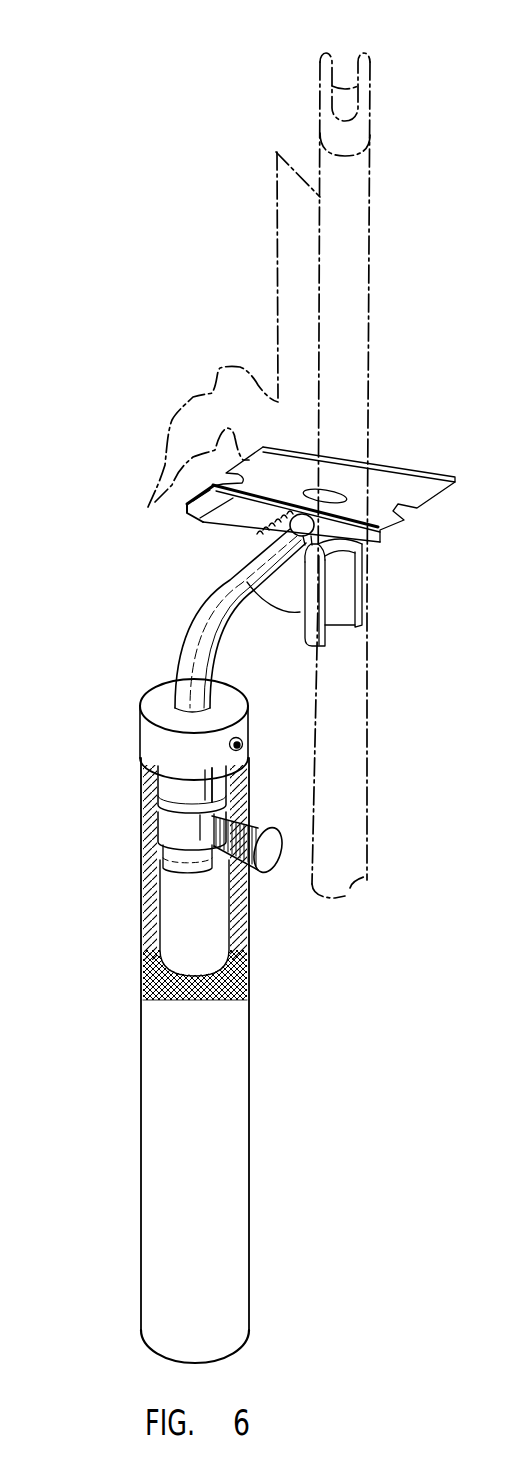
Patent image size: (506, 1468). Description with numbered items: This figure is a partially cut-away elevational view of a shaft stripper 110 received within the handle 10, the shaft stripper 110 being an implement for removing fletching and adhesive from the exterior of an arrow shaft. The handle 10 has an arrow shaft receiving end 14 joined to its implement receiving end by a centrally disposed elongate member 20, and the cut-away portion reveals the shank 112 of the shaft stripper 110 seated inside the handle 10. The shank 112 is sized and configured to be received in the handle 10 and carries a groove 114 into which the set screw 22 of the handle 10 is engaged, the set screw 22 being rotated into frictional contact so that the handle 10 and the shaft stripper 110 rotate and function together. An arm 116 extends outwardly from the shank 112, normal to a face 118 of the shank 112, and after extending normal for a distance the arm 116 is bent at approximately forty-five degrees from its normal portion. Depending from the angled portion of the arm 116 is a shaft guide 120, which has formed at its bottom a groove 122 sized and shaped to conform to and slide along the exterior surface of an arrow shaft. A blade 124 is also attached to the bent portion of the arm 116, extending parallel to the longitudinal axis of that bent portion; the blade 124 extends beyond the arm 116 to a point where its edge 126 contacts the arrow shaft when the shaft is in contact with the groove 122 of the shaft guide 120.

The handle 10 is at (275, 1028).
The arrow shaft receiving end 14 is at (235, 1360).
The elongate member 20 is at (210, 1112).
The set screw 22 is at (262, 858).
The shaft stripper 110 is at (170, 542).
The shank 112 is at (175, 785).
The groove 114 is at (175, 815).
The arm 116 is at (196, 615).
The face 118 is at (162, 692).
The shaft guide 120 is at (313, 602).
The groove 122 is at (337, 582).
The blade 124 is at (388, 488).
The edge 126 is at (322, 456).